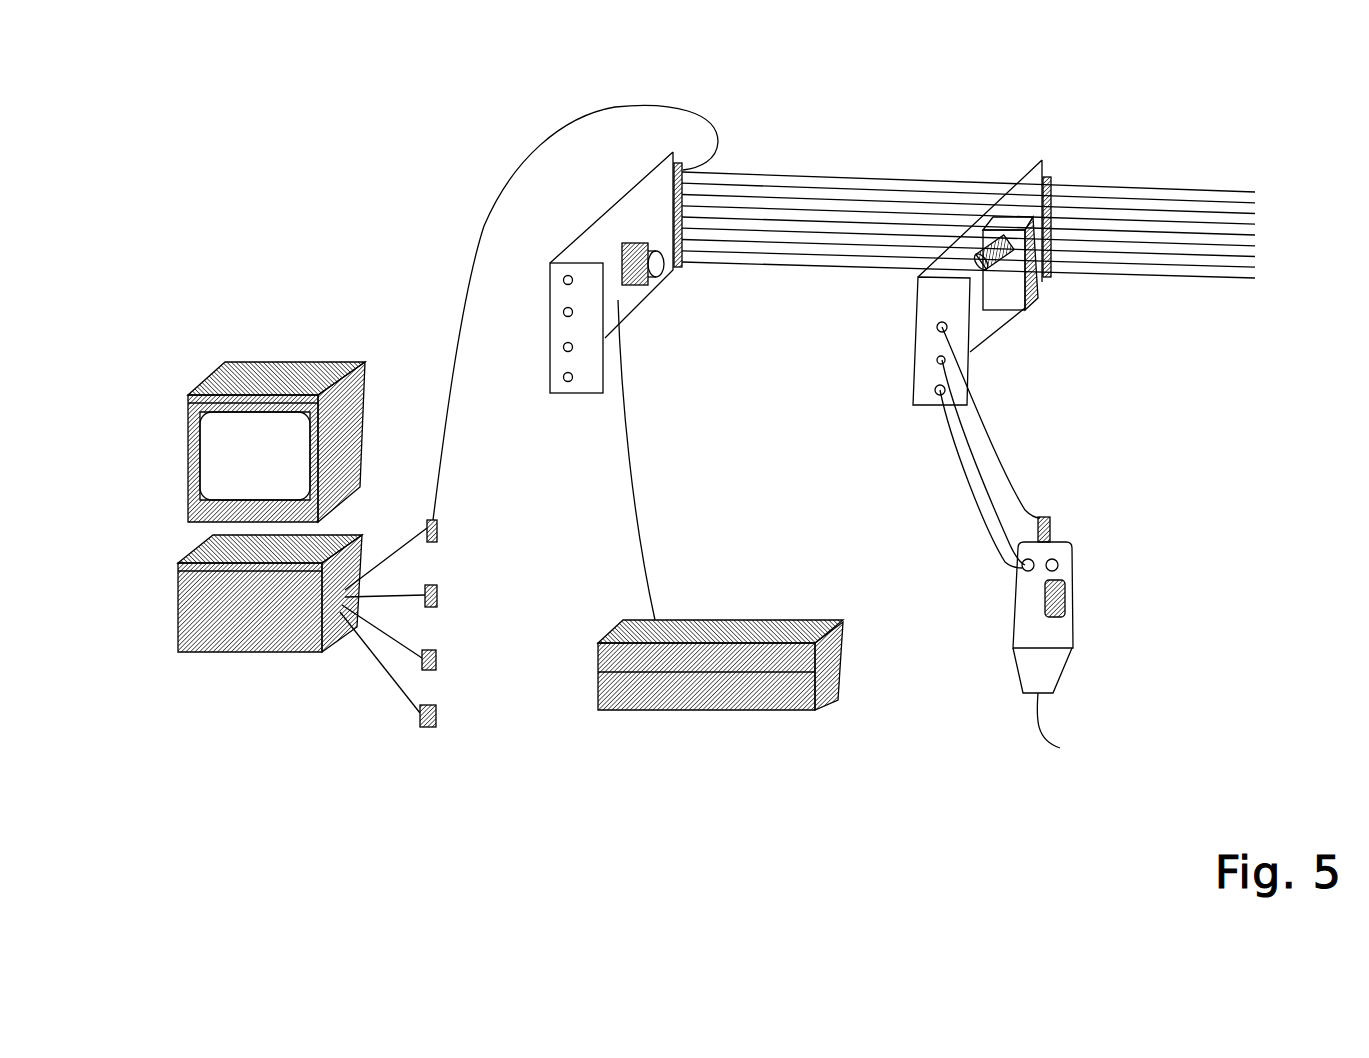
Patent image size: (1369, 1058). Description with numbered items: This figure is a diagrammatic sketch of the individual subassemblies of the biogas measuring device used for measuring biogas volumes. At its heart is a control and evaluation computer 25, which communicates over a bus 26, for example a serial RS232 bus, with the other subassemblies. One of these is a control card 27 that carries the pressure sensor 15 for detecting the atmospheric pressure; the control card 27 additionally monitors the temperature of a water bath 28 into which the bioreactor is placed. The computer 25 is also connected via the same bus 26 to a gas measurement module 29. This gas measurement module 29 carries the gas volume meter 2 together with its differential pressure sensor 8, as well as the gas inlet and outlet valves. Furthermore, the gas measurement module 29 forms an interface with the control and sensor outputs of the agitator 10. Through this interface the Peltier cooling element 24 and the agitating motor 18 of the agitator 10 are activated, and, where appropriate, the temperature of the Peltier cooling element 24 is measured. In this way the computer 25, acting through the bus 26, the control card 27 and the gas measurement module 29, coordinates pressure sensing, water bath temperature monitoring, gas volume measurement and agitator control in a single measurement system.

The gas volume meter 2 is at (1008, 297).
The differential pressure sensor 8 is at (1005, 258).
The agitator 10 is at (1088, 545).
The pressure sensor 15 is at (660, 284).
The agitating motor 18 is at (1067, 600).
The Peltier cooling element 24 is at (1053, 515).
The control and evaluation computer 25 is at (225, 652).
The bus 26 is at (1205, 272).
The control card 27 is at (555, 397).
The water bath 28 is at (703, 713).
The gas measurement module 29 is at (1028, 180).